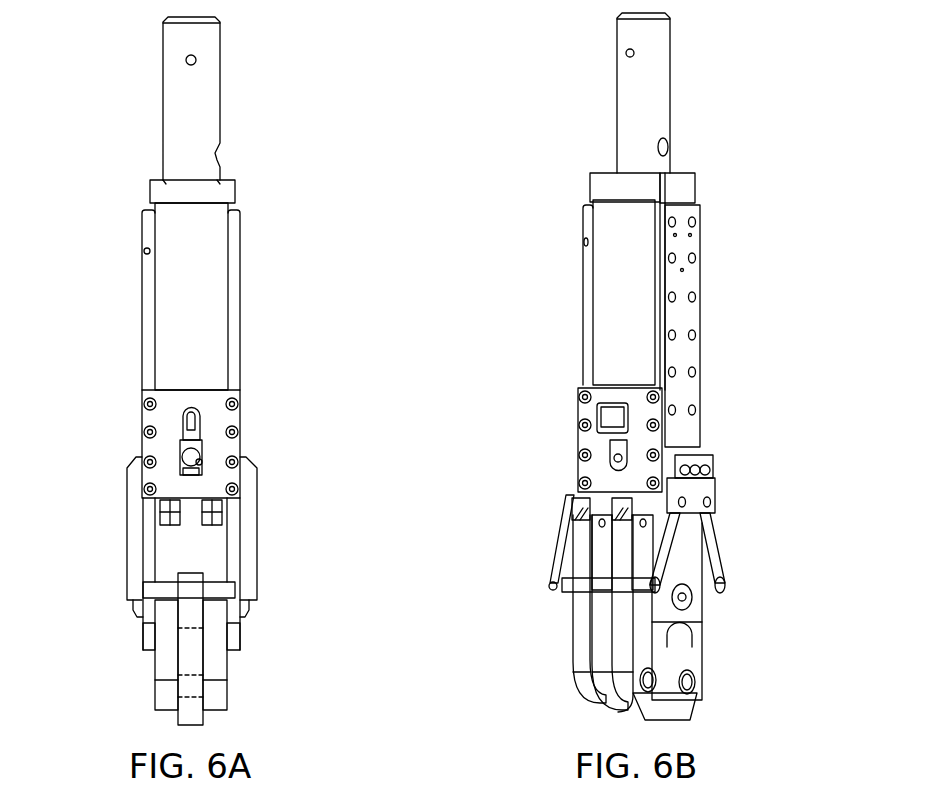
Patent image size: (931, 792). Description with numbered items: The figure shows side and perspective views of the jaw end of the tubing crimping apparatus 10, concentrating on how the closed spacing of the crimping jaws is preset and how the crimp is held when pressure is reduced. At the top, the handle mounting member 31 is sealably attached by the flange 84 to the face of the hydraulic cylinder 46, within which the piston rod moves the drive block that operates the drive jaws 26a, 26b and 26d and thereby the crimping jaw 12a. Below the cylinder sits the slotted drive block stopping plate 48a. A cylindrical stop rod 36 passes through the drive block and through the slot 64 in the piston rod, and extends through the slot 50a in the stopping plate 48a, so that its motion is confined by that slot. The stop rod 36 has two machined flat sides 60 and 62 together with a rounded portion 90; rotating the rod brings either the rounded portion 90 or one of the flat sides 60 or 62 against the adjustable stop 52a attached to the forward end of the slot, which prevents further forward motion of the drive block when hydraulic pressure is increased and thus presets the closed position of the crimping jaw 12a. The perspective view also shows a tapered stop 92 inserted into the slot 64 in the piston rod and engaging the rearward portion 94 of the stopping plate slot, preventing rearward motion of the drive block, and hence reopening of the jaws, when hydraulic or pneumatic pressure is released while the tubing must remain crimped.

In FIG. 6A, the tubing crimping apparatus 10 is at (342, 264).
In FIG. 6B, the tubing crimping apparatus 10 is at (777, 279).
In FIG. 6A, the handle mounting member 31 is at (178, 113).
In FIG. 6B, the handle mounting member 31 is at (627, 113).
In FIG. 6A, the flange 84 is at (234, 185).
In FIG. 6B, the flange 84 is at (580, 167).
In FIG. 6A, the hydraulic cylinder 46 is at (178, 276).
In FIG. 6B, the hydraulic cylinder 46 is at (618, 302).
In FIG. 6A, the drive block stopping plate 48a is at (162, 415).
In FIG. 6A, the slot 50a is at (277, 437).
In FIG. 6A, the slot 64 is at (251, 395).
In FIG. 6A, the stop rod 36 is at (170, 453).
In FIG. 6B, the stop rod 36 is at (640, 447).
In FIG. 6A, the flat side 60 is at (212, 444).
In FIG. 6A, the flat side 62 is at (216, 459).
In FIG. 6A, the rounded portion 90 is at (162, 470).
In FIG. 6A, the adjustable stop 52a is at (171, 482).
In FIG. 6B, the adjustable stop 52a is at (593, 476).
In FIG. 6B, the rearward portion 94 is at (600, 399).
In FIG. 6B, the tapered stop 92 is at (580, 436).
In FIG. 6B, the crimping jaw 12a is at (593, 622).
In FIG. 6B, the drive jaw 26a is at (618, 706).
In FIG. 6B, the drive jaw 26b is at (713, 646).
In FIG. 6B, the drive jaw 26d is at (561, 672).